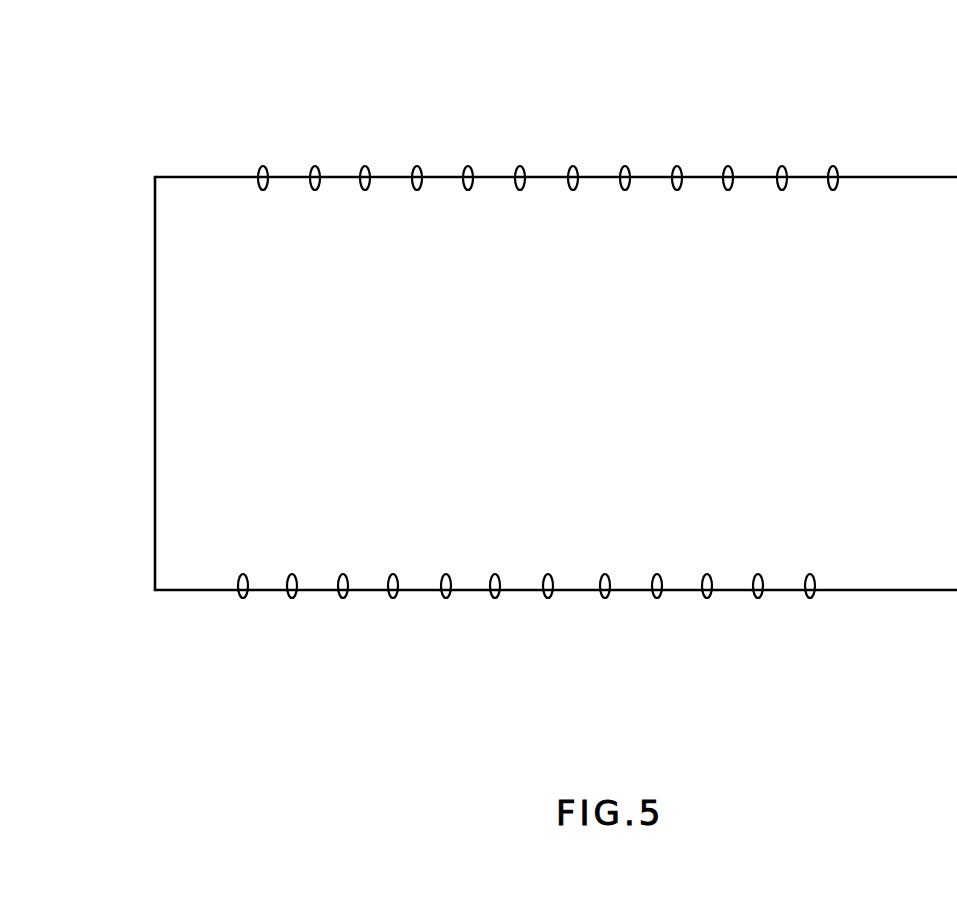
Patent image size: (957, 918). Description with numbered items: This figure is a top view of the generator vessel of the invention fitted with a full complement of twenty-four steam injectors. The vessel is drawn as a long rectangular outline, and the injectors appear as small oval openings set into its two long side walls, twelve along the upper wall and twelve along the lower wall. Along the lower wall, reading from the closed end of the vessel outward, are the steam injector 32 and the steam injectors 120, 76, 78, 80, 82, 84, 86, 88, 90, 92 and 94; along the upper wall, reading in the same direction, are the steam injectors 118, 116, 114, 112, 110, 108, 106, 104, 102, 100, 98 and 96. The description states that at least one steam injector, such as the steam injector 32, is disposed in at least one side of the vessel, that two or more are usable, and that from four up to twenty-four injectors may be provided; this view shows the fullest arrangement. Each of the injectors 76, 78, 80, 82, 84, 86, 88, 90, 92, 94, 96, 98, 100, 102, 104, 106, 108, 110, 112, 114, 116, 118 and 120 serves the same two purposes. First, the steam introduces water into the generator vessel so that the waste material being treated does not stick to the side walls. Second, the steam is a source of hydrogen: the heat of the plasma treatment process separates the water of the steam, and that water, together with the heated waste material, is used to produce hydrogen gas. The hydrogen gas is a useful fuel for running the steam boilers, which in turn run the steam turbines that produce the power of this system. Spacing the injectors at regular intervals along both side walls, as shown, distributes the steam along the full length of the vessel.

The steam injector 118 is at (265, 165).
The steam injector 116 is at (315, 165).
The steam injector 114 is at (365, 165).
The steam injector 112 is at (417, 165).
The steam injector 110 is at (468, 165).
The steam injector 108 is at (520, 160).
The steam injector 106 is at (573, 160).
The steam injector 104 is at (625, 160).
The steam injector 102 is at (677, 160).
The steam injector 100 is at (728, 160).
The steam injector 98 is at (782, 163).
The steam injector 96 is at (833, 163).
The steam injector 32 is at (243, 598).
The steam injector 120 is at (292, 598).
The steam injector 76 is at (343, 598).
The steam injector 78 is at (393, 598).
The steam injector 80 is at (446, 598).
The steam injector 82 is at (495, 598).
The steam injector 84 is at (548, 598).
The steam injector 86 is at (605, 598).
The steam injector 88 is at (657, 598).
The steam injector 90 is at (707, 598).
The steam injector 92 is at (758, 598).
The steam injector 94 is at (810, 598).